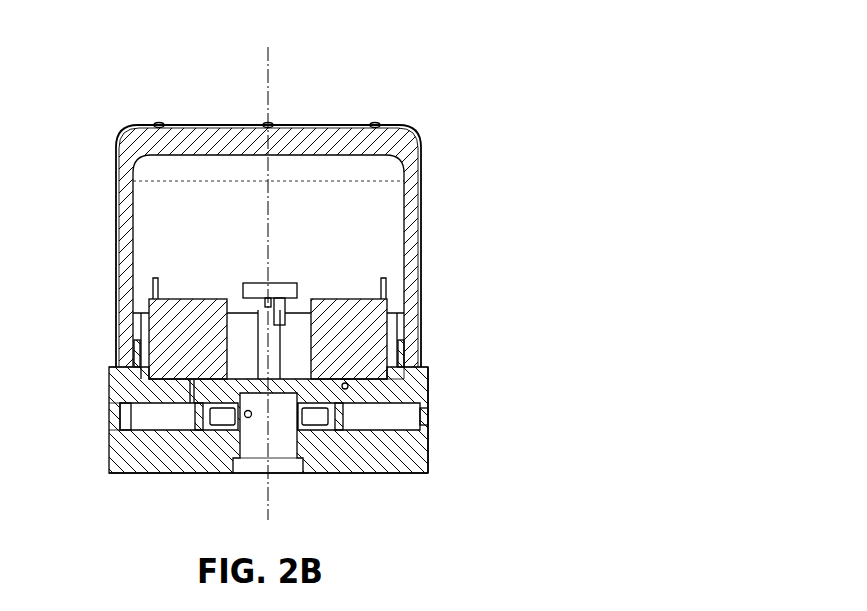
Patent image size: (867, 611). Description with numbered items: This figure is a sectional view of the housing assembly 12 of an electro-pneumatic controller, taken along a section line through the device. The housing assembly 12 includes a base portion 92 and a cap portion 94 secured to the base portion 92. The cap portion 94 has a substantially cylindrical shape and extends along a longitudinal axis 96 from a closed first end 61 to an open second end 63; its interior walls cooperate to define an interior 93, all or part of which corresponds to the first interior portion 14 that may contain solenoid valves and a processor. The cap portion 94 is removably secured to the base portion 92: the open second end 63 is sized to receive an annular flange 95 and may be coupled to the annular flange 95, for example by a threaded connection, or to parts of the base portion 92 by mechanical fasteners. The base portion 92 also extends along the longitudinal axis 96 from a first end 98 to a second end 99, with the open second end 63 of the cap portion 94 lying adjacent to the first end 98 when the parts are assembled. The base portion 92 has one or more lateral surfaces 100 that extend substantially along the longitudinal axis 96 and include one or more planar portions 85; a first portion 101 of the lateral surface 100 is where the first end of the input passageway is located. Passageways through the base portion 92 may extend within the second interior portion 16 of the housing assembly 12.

The housing assembly 12 is at (526, 175).
The first interior portion 14 is at (158, 233).
The second interior portion 16 is at (375, 420).
The closed first end 61 is at (355, 126).
The open second end 63 is at (412, 380).
The planar portion 85 is at (429, 452).
The base portion 92 is at (112, 466).
The interior 93 is at (370, 233).
The cap portion 94 is at (424, 160).
The annular flange 95 is at (397, 343).
The longitudinal axis 96 is at (272, 54).
The first end 98 is at (117, 365).
The second end 99 is at (177, 474).
The lateral surface 100 is at (112, 450).
The first portion 101 is at (117, 420).